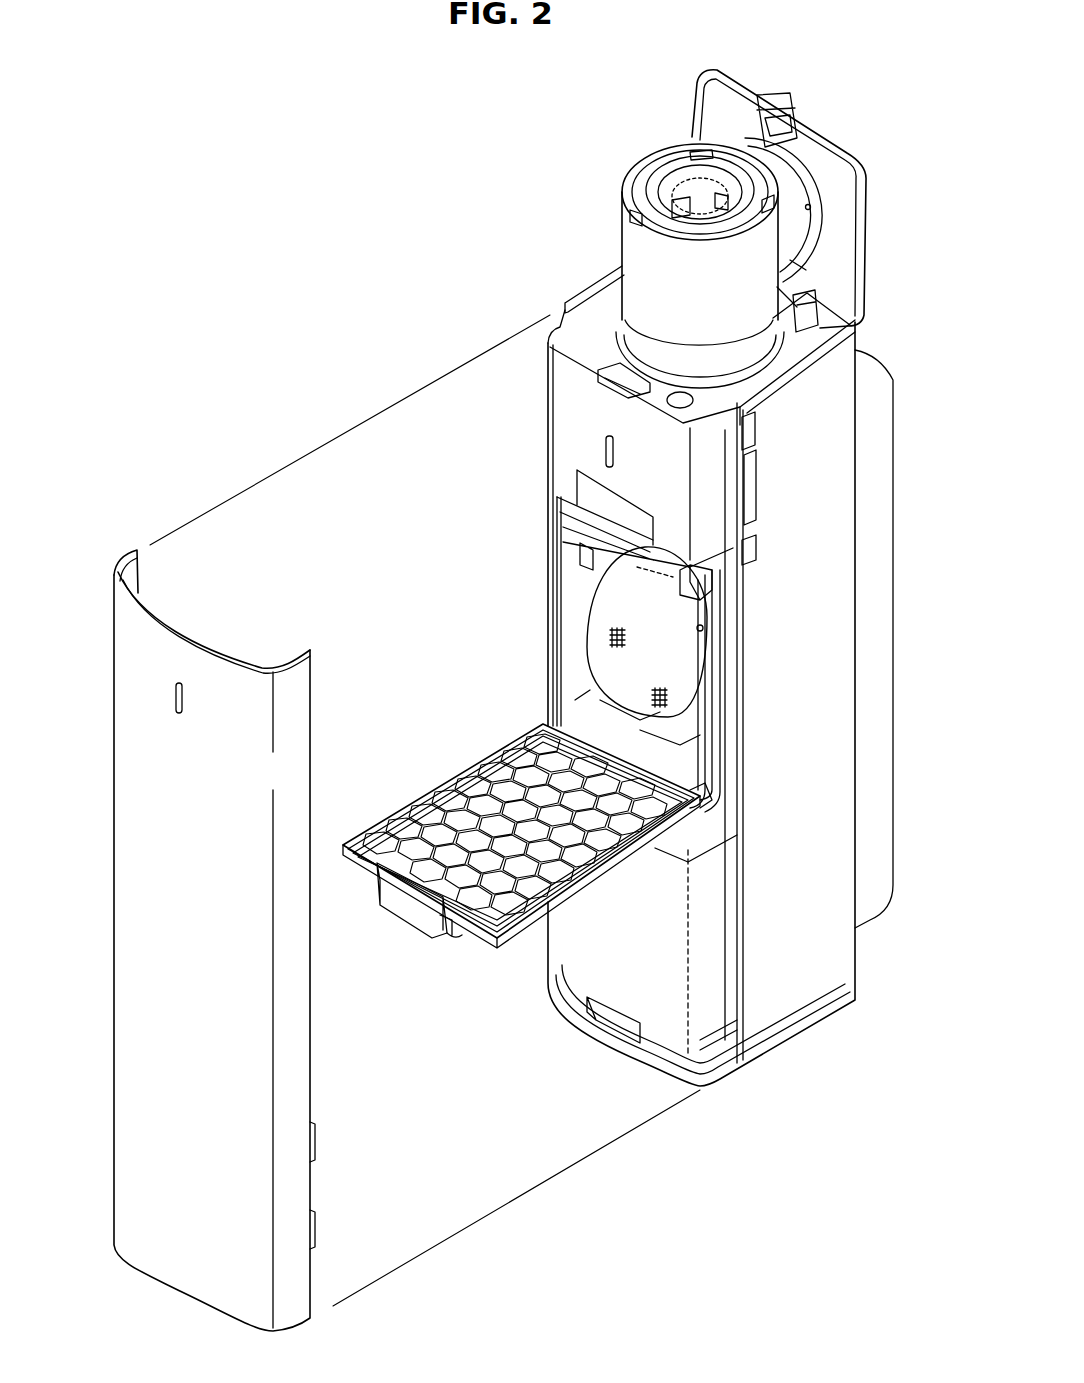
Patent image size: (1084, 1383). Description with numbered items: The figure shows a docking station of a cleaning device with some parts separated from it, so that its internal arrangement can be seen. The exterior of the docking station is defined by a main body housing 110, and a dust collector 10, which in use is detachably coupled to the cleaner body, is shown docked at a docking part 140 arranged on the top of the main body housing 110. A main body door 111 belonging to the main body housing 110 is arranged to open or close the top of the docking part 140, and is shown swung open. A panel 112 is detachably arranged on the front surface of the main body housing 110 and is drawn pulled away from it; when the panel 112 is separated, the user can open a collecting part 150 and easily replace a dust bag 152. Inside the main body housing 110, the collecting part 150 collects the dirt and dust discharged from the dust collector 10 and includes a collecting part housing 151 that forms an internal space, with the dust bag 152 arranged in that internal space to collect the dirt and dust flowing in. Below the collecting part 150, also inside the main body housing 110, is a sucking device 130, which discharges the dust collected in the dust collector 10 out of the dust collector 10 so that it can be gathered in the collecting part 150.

The dust collector 10 is at (628, 245).
The main body housing 110 is at (833, 903).
The main body door 111 is at (843, 230).
The panel 112 is at (128, 733).
The sucking device 130 is at (650, 997).
The docking part 140 is at (778, 363).
The collecting part 150 is at (715, 613).
The collecting part housing 151 is at (697, 770).
The dust bag 152 is at (680, 660).